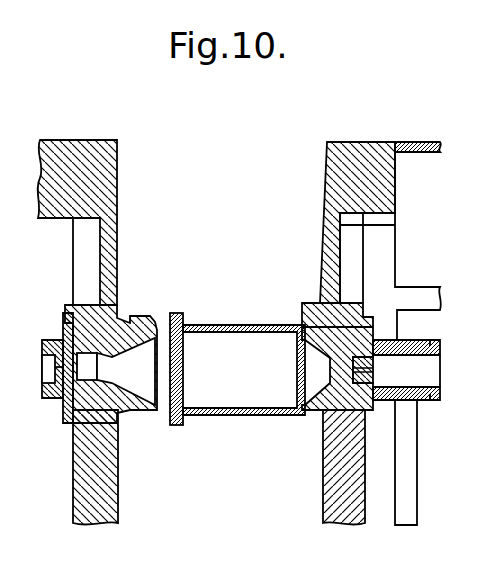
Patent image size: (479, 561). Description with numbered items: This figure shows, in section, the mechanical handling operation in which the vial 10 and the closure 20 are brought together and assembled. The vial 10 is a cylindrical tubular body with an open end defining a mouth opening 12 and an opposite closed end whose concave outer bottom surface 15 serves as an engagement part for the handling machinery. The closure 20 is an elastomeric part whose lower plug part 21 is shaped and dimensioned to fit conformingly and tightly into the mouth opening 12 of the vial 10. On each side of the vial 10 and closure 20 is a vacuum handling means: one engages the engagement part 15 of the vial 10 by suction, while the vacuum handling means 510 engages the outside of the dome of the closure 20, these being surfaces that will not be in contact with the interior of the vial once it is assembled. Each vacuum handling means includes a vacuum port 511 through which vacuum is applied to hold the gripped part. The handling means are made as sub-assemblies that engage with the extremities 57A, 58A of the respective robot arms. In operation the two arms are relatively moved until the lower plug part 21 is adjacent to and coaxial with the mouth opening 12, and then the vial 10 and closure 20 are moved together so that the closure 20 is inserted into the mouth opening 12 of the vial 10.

The extremity of robot arm 57A is at (72, 165).
The extremity of robot arm 58A is at (375, 160).
The vacuum port 511 is at (45, 372).
The vacuum handling means 510 is at (90, 404).
The closure 20 is at (130, 415).
The lower plug part 21 is at (147, 327).
The vial 10 is at (233, 415).
The mouth opening 12 is at (185, 368).
The outer bottom surface 15 is at (307, 333).